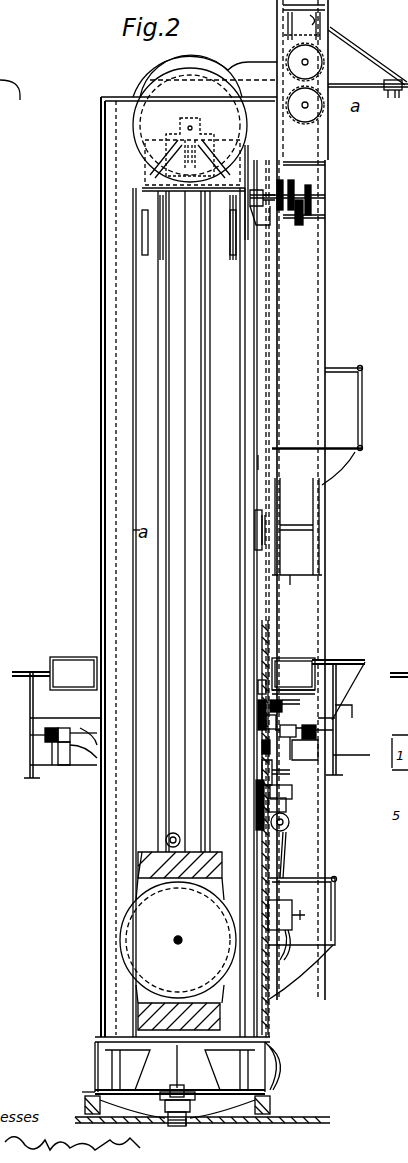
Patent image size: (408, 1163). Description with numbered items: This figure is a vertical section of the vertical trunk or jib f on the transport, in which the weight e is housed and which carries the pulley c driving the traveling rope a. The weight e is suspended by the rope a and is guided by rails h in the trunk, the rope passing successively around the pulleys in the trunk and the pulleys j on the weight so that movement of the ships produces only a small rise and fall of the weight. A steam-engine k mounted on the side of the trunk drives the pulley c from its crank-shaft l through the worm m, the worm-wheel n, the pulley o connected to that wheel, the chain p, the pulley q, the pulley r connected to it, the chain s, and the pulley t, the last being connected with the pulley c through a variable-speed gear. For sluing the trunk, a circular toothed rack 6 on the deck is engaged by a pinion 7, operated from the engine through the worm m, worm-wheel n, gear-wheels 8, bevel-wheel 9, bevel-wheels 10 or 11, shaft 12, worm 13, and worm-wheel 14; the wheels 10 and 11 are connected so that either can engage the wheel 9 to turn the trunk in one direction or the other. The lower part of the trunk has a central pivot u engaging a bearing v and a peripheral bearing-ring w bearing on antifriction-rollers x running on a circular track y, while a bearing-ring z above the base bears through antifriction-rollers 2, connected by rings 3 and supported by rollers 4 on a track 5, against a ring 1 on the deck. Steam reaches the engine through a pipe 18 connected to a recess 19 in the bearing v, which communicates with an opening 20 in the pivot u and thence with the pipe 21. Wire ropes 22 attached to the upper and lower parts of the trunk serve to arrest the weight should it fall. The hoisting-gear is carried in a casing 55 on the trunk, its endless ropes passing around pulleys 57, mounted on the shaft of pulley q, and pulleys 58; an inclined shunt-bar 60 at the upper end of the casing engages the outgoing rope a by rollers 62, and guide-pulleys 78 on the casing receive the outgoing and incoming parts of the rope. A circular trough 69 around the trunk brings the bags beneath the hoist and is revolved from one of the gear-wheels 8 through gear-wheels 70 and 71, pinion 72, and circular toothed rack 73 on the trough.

The antifriction-rollers 4 is at (330, 3).
The pulleys 58 is at (318, 35).
The shunt-bar 60 is at (367, 56).
The guide-pulleys 78 is at (322, 82).
The rollers 62 is at (395, 92).
The casing 55 is at (328, 264).
The pulleys 57 is at (312, 500).
The circular toothed rack 73 is at (80, 690).
The circular rack or trough 69 is at (288, 660).
The worm-wheel 14 is at (280, 712).
The pinion 72 is at (342, 695).
The track 5 is at (30, 722).
The gear-wheel 71 is at (262, 686).
The gear-wheel 70 is at (262, 710).
The worm 13 is at (284, 728).
The pinion 7 is at (310, 725).
The shaft 12 is at (262, 748).
The bevel-wheel 9 is at (262, 772).
The bevel-wheel 10 is at (278, 778).
The gear-wheels 8 is at (262, 780).
The bevel-wheel 11 is at (290, 793).
The wire ropes 22 is at (185, 659).
The rings 3 is at (58, 728).
The antifriction-rollers 2 is at (64, 728).
The circular toothed rack 6 is at (42, 735).
The ring 1 is at (50, 742).
The pipe 21 is at (270, 1042).
The opening 20 is at (182, 1090).
The pipe 18 is at (203, 1108).
The recess 19 is at (183, 1124).
The trunk or jib f is at (101, 574).
The traveling rope a is at (241, 376).
The pulley t is at (260, 178).
The pulley c is at (283, 215).
The chain s is at (262, 462).
The pulley q is at (256, 529).
The pulley r is at (262, 538).
The bearing-ring z is at (70, 745).
The chain p is at (258, 727).
The worm-wheel n is at (290, 800).
The pulley o is at (258, 820).
The worm m is at (290, 822).
The crank-shaft l is at (284, 845).
The steam-engine k is at (290, 900).
The rails h is at (200, 775).
The pulleys j is at (178, 940).
The weight e is at (220, 1010).
The antifriction-rollers x is at (286, 1106).
The peripheral bearing-ring w is at (268, 1092).
The central pivot u is at (172, 1126).
The bearing v is at (192, 1122).
The circular track y is at (85, 1100).